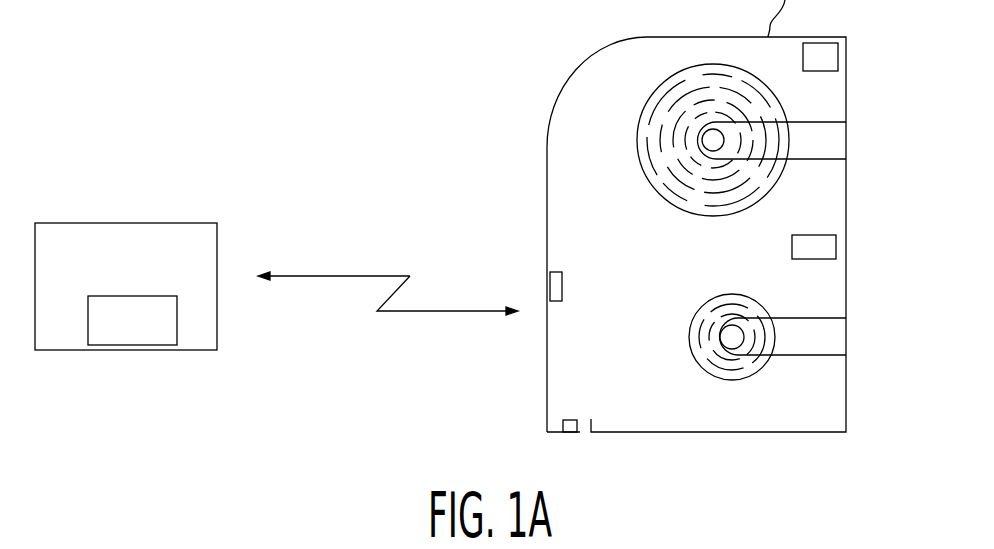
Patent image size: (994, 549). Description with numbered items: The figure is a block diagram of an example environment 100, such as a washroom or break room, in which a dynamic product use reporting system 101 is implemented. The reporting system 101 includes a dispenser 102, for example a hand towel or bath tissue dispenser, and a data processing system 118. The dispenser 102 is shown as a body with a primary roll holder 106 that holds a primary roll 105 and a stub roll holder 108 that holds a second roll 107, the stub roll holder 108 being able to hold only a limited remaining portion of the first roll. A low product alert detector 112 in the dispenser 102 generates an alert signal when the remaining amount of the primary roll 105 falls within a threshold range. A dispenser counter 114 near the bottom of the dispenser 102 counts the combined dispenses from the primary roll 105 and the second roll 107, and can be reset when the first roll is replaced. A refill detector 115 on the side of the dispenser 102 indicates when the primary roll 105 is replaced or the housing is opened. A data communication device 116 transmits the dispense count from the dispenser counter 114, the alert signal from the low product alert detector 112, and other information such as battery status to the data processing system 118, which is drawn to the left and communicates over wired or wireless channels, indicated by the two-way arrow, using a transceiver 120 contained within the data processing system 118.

The environment 100 is at (206, 31).
The dynamic product use reporting system 101 is at (431, 283).
The dispenser 102 is at (558, 72).
The data processing system 118 is at (125, 223).
The transceiver 120 is at (158, 333).
The primary roll 105 is at (653, 170).
The primary roll holder 106 is at (837, 135).
The second roll 107 is at (698, 353).
The stub roll holder 108 is at (837, 333).
The low product alert detector 112 is at (836, 53).
The dispenser counter 114 is at (563, 426).
The refill detector 115 is at (548, 288).
The data communication device 116 is at (836, 248).